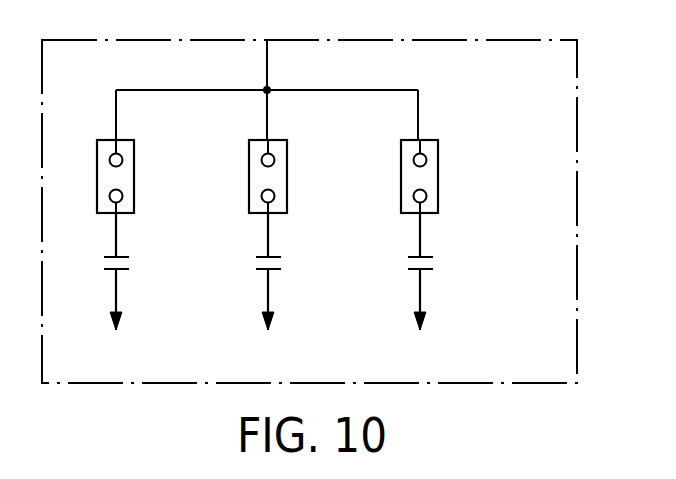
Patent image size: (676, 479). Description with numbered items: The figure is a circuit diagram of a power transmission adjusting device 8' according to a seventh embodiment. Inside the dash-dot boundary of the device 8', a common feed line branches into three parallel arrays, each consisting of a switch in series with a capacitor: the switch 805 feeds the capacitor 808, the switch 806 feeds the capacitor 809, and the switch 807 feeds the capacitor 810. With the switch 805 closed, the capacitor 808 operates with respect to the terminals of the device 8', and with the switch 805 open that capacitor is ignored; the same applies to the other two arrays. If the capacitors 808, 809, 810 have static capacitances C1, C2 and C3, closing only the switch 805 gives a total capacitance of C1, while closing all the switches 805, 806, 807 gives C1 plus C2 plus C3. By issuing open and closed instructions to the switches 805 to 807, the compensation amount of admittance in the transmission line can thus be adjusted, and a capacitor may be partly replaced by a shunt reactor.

The power transmission adjusting device 8' is at (339, 211).
The switch 805 is at (135, 173).
The switch 806 is at (288, 173).
The switch 807 is at (439, 173).
The capacitor 808 is at (131, 262).
The capacitor 809 is at (283, 262).
The capacitor 810 is at (435, 262).